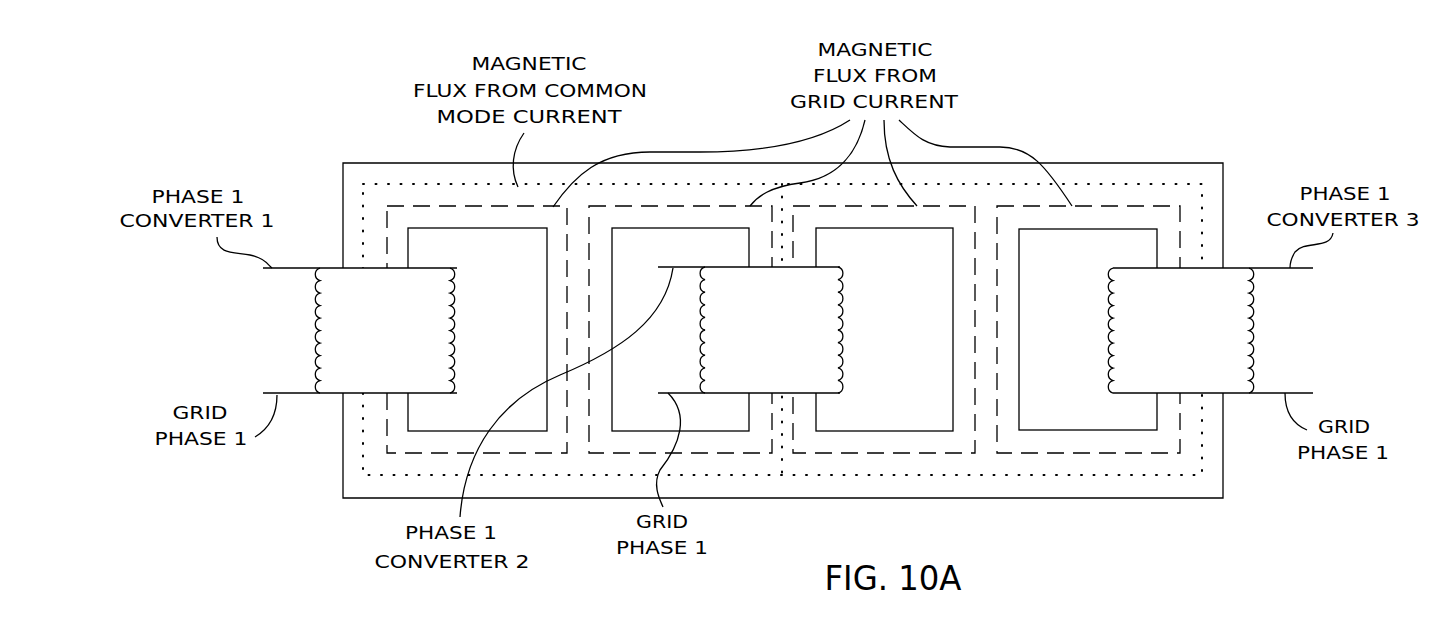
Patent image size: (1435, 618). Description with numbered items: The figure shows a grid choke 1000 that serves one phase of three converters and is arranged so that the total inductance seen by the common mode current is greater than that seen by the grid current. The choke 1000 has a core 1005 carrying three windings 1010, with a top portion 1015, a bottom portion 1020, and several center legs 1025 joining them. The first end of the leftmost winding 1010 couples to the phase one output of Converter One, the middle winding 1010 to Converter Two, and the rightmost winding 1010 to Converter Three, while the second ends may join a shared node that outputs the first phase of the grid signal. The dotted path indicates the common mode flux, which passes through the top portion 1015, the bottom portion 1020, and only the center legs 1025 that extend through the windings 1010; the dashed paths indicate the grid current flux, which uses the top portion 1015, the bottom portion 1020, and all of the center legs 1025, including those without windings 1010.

The grid choke 1000 is at (1197, 55).
The core 1005 is at (744, 337).
The windings 1010 is at (310, 343).
The top portion of the core 1015 is at (343, 196).
The bottom portion of the core 1020 is at (343, 480).
The center legs 1025 is at (547, 322).